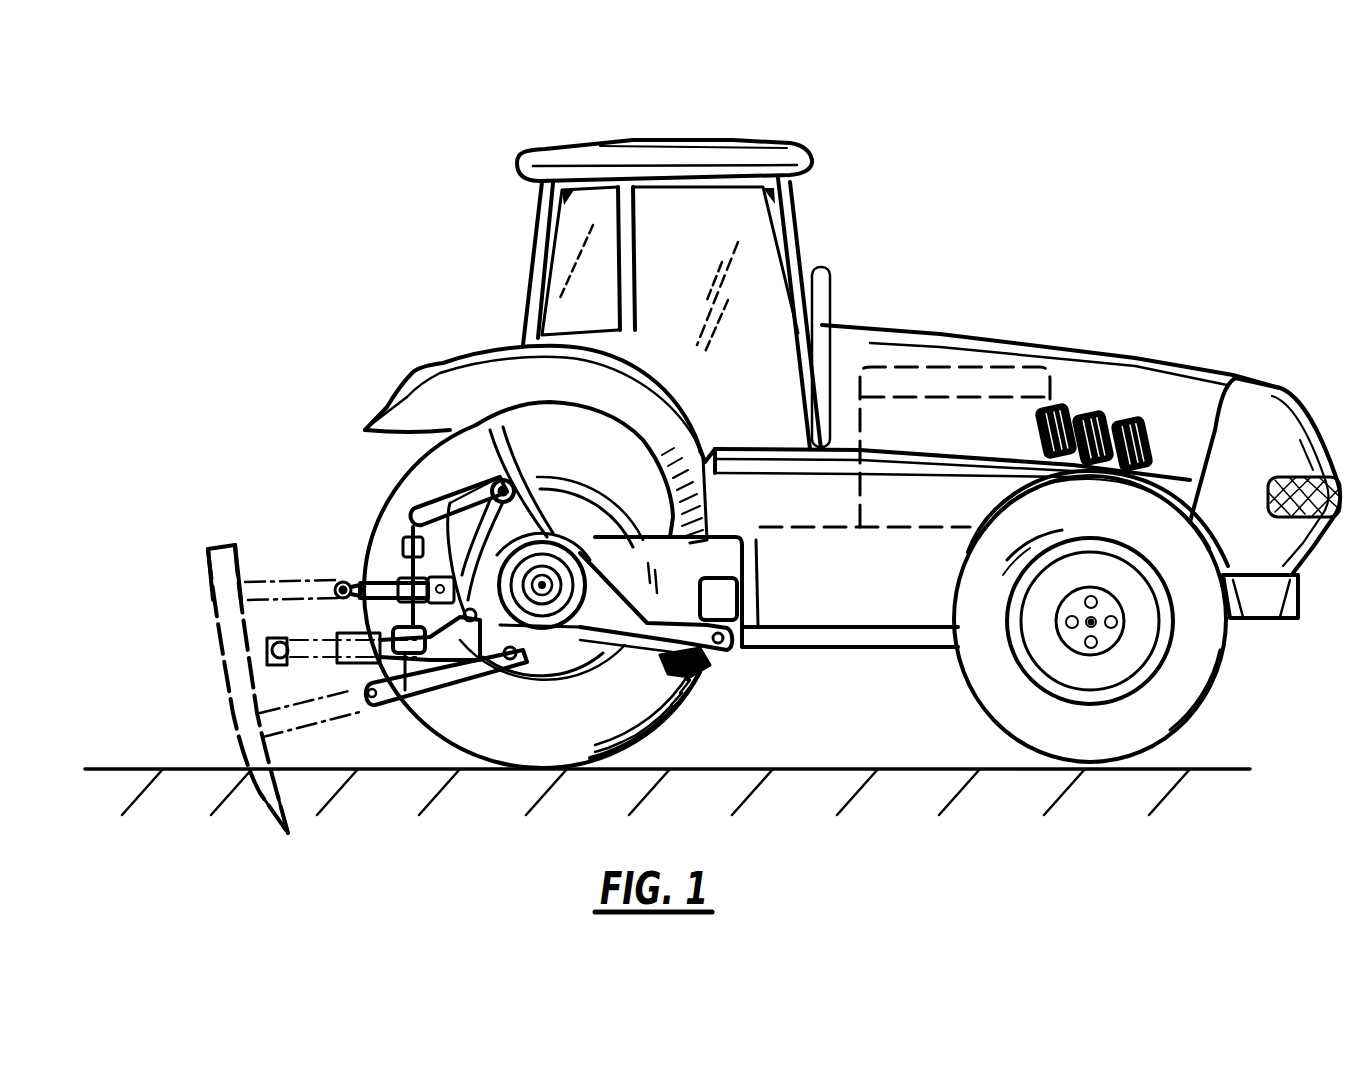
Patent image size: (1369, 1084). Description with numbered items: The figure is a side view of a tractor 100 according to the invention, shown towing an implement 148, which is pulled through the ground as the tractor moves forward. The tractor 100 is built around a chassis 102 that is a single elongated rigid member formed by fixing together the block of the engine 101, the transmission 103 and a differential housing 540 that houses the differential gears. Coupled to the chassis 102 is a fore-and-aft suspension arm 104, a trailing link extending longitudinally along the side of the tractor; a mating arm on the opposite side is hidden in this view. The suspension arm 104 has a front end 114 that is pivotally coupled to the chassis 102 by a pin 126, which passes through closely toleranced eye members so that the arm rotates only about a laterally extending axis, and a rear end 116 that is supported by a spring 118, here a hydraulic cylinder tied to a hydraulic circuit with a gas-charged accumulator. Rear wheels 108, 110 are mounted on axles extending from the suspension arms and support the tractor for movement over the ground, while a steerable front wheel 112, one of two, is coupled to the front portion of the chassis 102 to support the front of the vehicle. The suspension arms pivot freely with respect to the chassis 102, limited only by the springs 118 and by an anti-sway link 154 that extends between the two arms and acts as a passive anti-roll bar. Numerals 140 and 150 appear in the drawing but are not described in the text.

The tractor 100 is at (920, 250).
The engine 101 is at (983, 368).
The chassis 102 is at (753, 610).
The transmission 103 is at (815, 525).
The right suspension arm 104 is at (595, 625).
The rear wheel 108 is at (512, 422).
The rear wheel 110 is at (507, 750).
The steerable front wheel 112 is at (1208, 666).
The front end of suspension arm 114 is at (690, 660).
The rear end of suspension arm 116 is at (478, 655).
The spring 118 is at (458, 494).
The pin 126 is at (722, 641).
The upper link 140 is at (497, 480).
The implement 148 is at (220, 545).
The blade tip 150 is at (285, 822).
The anti-sway link 154 is at (692, 690).
The differential housing 540 is at (583, 508).